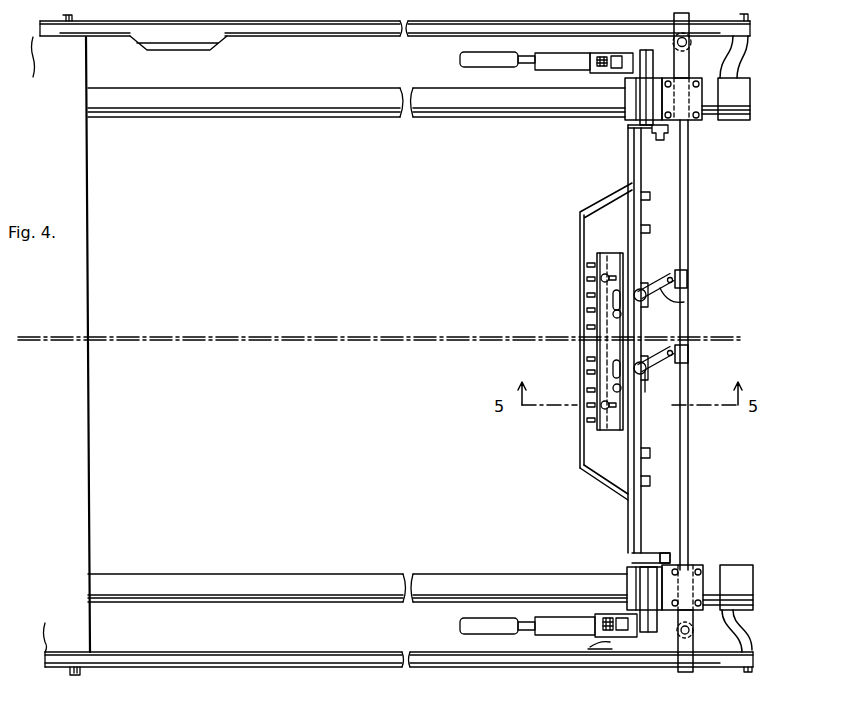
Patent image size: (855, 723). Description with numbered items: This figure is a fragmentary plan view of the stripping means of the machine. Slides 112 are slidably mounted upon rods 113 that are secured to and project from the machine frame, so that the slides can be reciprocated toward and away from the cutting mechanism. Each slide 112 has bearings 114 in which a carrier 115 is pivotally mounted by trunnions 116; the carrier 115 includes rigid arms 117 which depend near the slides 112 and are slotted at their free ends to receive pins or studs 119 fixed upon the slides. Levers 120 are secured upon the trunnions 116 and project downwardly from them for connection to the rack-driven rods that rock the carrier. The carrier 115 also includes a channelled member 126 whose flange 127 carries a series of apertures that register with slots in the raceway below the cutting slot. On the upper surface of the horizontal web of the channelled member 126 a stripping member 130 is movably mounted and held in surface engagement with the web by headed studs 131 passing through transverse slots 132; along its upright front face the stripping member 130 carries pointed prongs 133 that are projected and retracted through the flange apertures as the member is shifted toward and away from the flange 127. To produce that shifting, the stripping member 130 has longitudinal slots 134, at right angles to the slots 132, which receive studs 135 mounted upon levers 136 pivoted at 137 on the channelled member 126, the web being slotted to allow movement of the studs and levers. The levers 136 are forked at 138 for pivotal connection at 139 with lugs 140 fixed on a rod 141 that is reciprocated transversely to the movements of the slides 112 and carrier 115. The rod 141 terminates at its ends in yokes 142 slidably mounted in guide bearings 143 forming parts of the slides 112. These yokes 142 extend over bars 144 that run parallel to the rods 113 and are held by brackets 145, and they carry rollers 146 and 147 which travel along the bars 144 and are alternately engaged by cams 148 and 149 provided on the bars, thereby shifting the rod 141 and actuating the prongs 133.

The slide 112 is at (630, 95).
The rod 113 is at (302, 108).
The bearing 114 is at (643, 108).
The carrier 115 is at (636, 158).
The trunnion 116 is at (640, 52).
The rigid arm 117 is at (682, 560).
The pin or stud 119 is at (665, 551).
The lever 120 is at (630, 628).
The channelled member 126 is at (602, 465).
The flange 127 is at (582, 445).
The stripping member 130 is at (600, 325).
The headed stud 131 is at (600, 278).
The transverse slot 132 is at (610, 278).
The pointed projection or prong 133 is at (600, 400).
The longitudinal slot 134 is at (610, 298).
The stud 135 is at (612, 380).
The lever 136 is at (634, 305).
The pivot 137 is at (662, 387).
The fork 138 is at (690, 297).
The pivotal connection 139 is at (688, 277).
The lug 140 is at (693, 350).
The rod 141 is at (689, 188).
The yoke 142 is at (689, 25).
The guide bearing 143 is at (683, 88).
The bar 144 is at (378, 36).
The bracket 145 is at (741, 62).
The roller 146 is at (688, 633).
The roller 147 is at (690, 43).
The cam 148 is at (607, 643).
The cam 149 is at (180, 43).